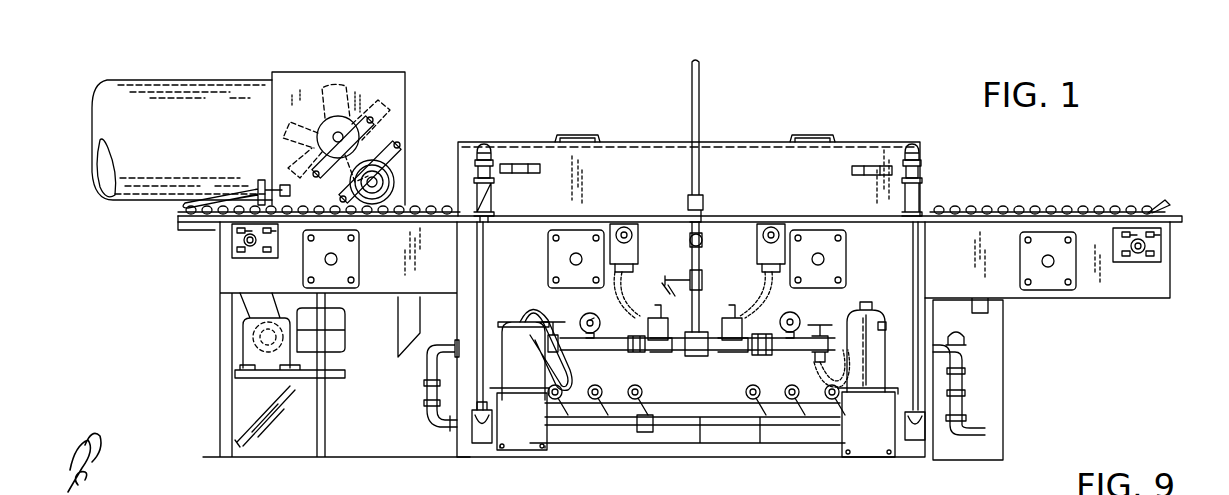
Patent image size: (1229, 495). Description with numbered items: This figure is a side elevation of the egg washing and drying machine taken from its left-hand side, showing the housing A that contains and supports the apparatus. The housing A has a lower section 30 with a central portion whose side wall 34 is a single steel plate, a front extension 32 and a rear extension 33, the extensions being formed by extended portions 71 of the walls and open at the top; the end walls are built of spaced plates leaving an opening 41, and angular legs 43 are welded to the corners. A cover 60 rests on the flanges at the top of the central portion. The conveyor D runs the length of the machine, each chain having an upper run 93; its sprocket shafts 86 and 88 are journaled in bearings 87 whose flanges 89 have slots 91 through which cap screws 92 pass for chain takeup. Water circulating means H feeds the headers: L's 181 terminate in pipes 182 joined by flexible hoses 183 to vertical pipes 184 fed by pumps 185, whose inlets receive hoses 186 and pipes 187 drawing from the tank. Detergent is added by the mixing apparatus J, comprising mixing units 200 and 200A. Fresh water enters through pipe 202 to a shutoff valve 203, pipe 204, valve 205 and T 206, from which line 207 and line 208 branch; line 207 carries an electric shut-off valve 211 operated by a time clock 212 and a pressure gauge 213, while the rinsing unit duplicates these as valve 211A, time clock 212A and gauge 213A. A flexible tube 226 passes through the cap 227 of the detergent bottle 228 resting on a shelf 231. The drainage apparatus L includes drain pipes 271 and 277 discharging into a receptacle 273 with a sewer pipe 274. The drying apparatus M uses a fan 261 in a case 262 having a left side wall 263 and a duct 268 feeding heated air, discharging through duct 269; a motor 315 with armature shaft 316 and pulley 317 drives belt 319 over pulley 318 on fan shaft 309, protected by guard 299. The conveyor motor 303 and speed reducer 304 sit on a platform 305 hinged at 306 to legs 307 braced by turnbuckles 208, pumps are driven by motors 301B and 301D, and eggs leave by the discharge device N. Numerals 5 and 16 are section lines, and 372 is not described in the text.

The duct 269 is at (167, 112).
The belt 319 is at (300, 138).
The fan 261 is at (345, 95).
The drying apparatus M is at (275, 65).
The shaft 309 is at (338, 133).
The pulley 318 is at (360, 118).
The case 262 is at (405, 75).
The left side wall 263 is at (393, 105).
The guard 299 is at (378, 138).
The pulley 317 is at (400, 150).
The motor 315 is at (392, 172).
The armature shaft 316 is at (378, 183).
The discharge device N is at (175, 222).
The cover 60 is at (744, 158).
The L 181 is at (485, 145).
The pipe 182 is at (495, 162).
The flexible hose 183 is at (494, 192).
The pipe 202 is at (691, 125).
The section line 5 is at (872, 140).
The wall 34 is at (527, 242).
The bearing 87 is at (232, 238).
The shaft 88 is at (248, 247).
The flange 89 is at (270, 240).
The slot 91 is at (270, 254).
The cap screw 92 is at (232, 252).
The shaft 86 is at (1146, 246).
The access panel 372 is at (360, 258).
The rear extension 33 is at (380, 283).
The extended portion 71 is at (437, 285).
The duct 268 is at (402, 358).
The speed reducer 304 is at (255, 350).
The motor 303 is at (335, 342).
The platform 305 is at (340, 378).
The hinge 306 is at (228, 380).
The leg 307 is at (223, 414).
The adjustable brace 208 is at (268, 416).
The leg 43 is at (452, 437).
The pipe 187 is at (955, 333).
The flexible hose 186 is at (966, 393).
The water circulating means H is at (976, 425).
The housing A is at (999, 233).
The upper run 93 is at (1027, 205).
The conveyor D is at (1073, 198).
The front extension 32 is at (1103, 287).
The lower section 30 is at (870, 229).
The vertical pipe 184 is at (485, 290).
The water pump 185 is at (483, 445).
The cap 227 is at (925, 322).
The shutoff valve 203 is at (702, 240).
The pipe 204 is at (704, 256).
The valve 205 is at (672, 278).
The time clock 212A is at (632, 225).
The time clock 212 is at (782, 225).
The T 206 is at (696, 357).
The mixing unit 200A is at (548, 314).
The pressure gauge 213A is at (590, 340).
The electric operated shut-off valve 211A is at (655, 318).
The electric operated shut-off valve 211 is at (735, 318).
The line 207 is at (752, 352).
The pressure gauge 213 is at (790, 352).
The valve / section line 16 is at (820, 315).
The mixing unit 200 is at (868, 325).
The flexible tube 226 is at (840, 350).
The bottle 228 is at (898, 320).
The sewer pipe 274 is at (620, 428).
The receptacle 273 is at (690, 430).
The drain pipe 277 is at (673, 445).
The drain pipe 271 is at (735, 445).
The drainage apparatus L is at (742, 448).
The opening 41 is at (600, 450).
The motor 301D is at (550, 425).
The motor 301B is at (838, 428).
The shelf 231 is at (876, 437).
The mixing apparatus J is at (861, 393).